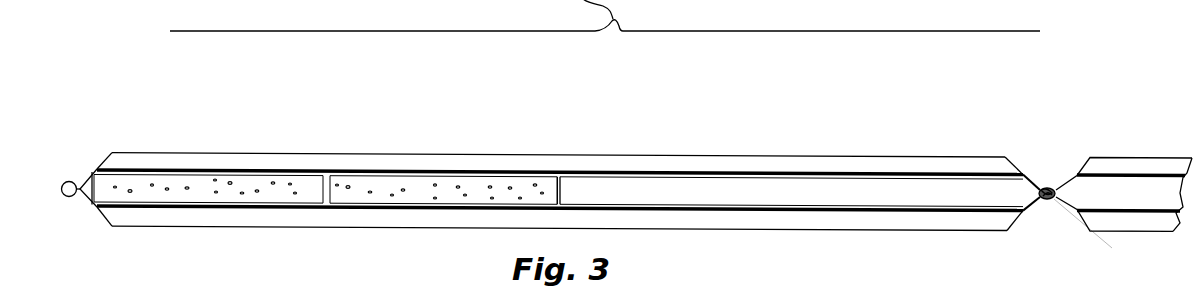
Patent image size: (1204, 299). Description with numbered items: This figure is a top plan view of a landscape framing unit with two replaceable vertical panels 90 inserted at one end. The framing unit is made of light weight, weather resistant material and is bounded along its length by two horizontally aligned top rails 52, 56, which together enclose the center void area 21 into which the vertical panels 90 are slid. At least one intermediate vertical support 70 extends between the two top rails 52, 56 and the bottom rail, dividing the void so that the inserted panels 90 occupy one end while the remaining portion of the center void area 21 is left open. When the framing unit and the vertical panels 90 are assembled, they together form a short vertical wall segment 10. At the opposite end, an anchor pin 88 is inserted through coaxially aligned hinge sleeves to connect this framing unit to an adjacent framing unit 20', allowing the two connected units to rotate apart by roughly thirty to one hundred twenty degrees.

The short vertical wall segment 10 is at (533, 226).
The adjacent framing unit 20' is at (1115, 154).
The center void area 21 is at (623, 192).
The top rail 52 is at (787, 168).
The top rail 56 is at (840, 220).
The intermediate vertical support 70 is at (562, 185).
The anchor pin 88 is at (1048, 202).
The replaceable vertical panel 90 is at (230, 175).